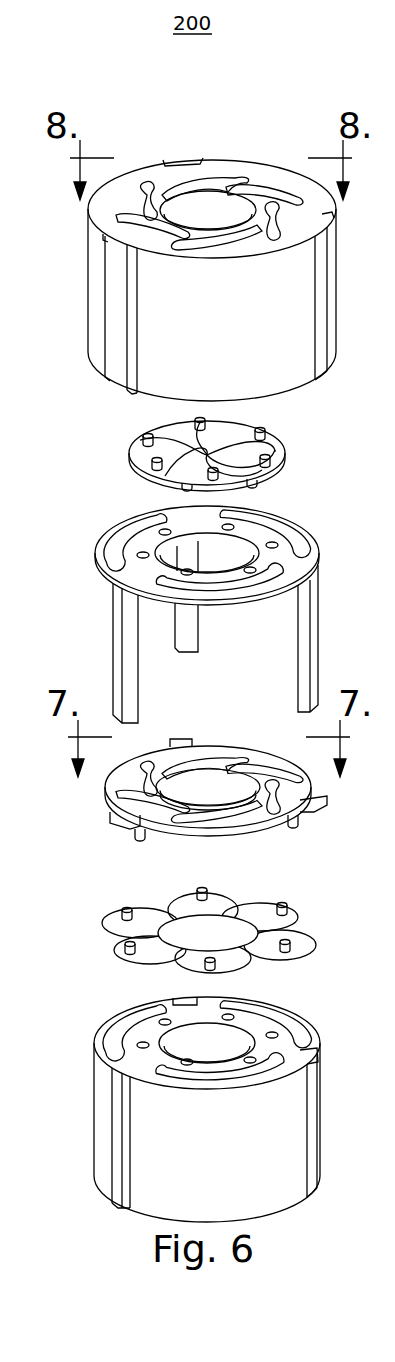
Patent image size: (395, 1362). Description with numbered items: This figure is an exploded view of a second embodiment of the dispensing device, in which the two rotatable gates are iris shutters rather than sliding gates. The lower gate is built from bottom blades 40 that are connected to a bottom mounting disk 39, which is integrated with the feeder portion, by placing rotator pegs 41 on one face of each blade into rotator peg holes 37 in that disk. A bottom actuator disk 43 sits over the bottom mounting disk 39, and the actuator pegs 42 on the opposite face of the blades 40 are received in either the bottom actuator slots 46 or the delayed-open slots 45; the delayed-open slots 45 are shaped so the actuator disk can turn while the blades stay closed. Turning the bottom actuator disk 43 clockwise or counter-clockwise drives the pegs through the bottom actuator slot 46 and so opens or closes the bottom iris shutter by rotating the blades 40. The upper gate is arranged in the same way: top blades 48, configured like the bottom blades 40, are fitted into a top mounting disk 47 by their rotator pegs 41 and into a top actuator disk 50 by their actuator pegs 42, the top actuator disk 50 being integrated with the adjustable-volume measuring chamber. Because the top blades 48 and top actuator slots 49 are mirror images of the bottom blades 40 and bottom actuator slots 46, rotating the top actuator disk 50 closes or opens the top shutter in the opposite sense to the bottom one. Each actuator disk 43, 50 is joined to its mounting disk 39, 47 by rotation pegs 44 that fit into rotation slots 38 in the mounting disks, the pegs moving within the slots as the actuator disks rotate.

The rotator peg holes 37 is at (312, 1052).
The rotation slots 38 is at (112, 1033).
The bottom mounting disk 39 is at (153, 1065).
The bottom blades 40 is at (137, 927).
The rotator pegs 41 is at (257, 967).
The actuator pegs 42 is at (287, 903).
The bottom actuator disk 43 is at (192, 842).
The rotation pegs 44 is at (300, 827).
The delayed-open slots 45 is at (207, 817).
The bottom actuator slots 46 is at (248, 818).
The top mounting disk 47 is at (302, 562).
The top blades 48 is at (142, 452).
The top actuator slots 49 is at (227, 172).
The top actuator disk 50 is at (153, 165).